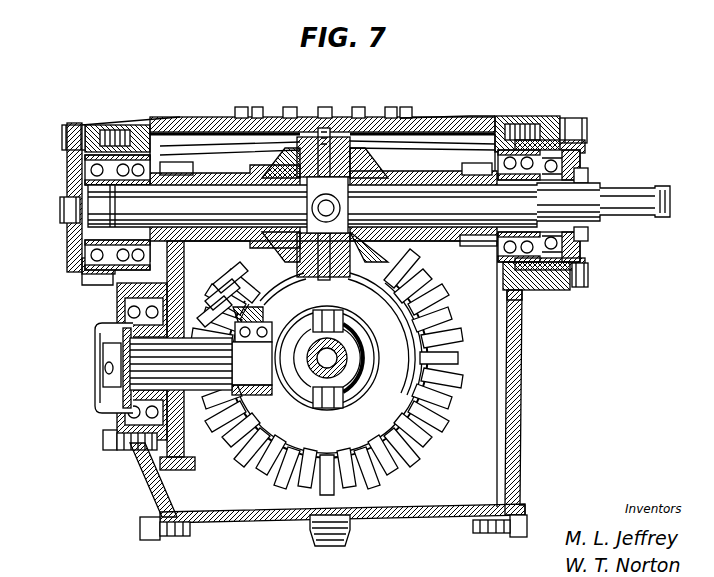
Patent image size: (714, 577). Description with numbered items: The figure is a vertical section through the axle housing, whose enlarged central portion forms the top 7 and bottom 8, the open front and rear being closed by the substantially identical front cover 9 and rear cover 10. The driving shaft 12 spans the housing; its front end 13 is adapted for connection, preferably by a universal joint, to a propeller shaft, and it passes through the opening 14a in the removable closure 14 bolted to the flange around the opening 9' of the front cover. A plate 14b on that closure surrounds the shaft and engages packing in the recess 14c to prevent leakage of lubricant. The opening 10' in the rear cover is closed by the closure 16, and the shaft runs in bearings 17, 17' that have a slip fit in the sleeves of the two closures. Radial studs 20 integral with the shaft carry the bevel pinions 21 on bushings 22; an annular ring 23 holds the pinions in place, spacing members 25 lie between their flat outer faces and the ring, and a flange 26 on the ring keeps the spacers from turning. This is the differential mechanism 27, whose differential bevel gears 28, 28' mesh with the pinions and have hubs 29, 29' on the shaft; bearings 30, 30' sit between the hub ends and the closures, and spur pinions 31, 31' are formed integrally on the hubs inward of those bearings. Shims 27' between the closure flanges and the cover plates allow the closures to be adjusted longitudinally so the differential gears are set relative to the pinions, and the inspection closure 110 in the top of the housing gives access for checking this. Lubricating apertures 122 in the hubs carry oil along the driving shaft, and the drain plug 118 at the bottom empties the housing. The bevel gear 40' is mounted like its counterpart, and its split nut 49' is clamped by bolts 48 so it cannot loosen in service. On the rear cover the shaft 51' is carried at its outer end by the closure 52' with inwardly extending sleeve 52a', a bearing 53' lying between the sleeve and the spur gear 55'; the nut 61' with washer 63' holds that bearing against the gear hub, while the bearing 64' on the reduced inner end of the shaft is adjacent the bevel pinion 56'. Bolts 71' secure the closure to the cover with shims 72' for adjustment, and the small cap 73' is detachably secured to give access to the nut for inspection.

The top of housing member 7 is at (441, 117).
The bottom of housing member 8 is at (410, 515).
The front cover 9 is at (524, 402).
The opening in front cover 9' is at (537, 300).
The rear cover 10 is at (144, 480).
The opening in rear cover 10' is at (114, 121).
The driving shaft 12 is at (379, 205).
The front end of driving shaft 13 is at (648, 218).
The removable closure 14 is at (590, 160).
The opening in closure 14a is at (582, 190).
The plate 14b is at (595, 172).
The recess 14c is at (596, 236).
The closure 16 is at (67, 170).
The bearing 17 is at (556, 268).
The bearing 17' is at (84, 277).
The studs 20 is at (330, 135).
The bevel pinions 21 is at (290, 162).
The bushings 22 is at (327, 205).
The annular ring 23 is at (340, 150).
The spacing members 25 is at (358, 165).
The flange 26 is at (302, 286).
The differential mechanism 27 is at (573, 115).
The shims 27' is at (77, 123).
The differential bevel gear 28 is at (423, 169).
The differential bevel gear 28' is at (225, 197).
The hub 29 is at (340, 247).
The hub 29' is at (192, 355).
The bearing 30 is at (527, 120).
The bearing 30' is at (131, 119).
The pinion 31 is at (479, 374).
The pinion 31' is at (225, 170).
The bevel gear 40' is at (327, 372).
The bolts 48 is at (318, 410).
The nut 49' is at (337, 390).
The shaft 51' is at (205, 420).
The closure 52' is at (152, 386).
The sleeve 52a' is at (127, 456).
The bearing 53' is at (115, 361).
The spur gear 55' is at (228, 380).
The bevel pinion 56' is at (219, 294).
The nut 61' is at (87, 365).
The washer 63' is at (97, 368).
The bearing 64' is at (315, 378).
The bolts 71' is at (92, 445).
The shims 72' is at (118, 378).
The cap member 73' is at (70, 368).
The inspection opening closure 110 is at (306, 118).
The drain plug 118 is at (322, 547).
The lubricating apertures 122 is at (428, 182).